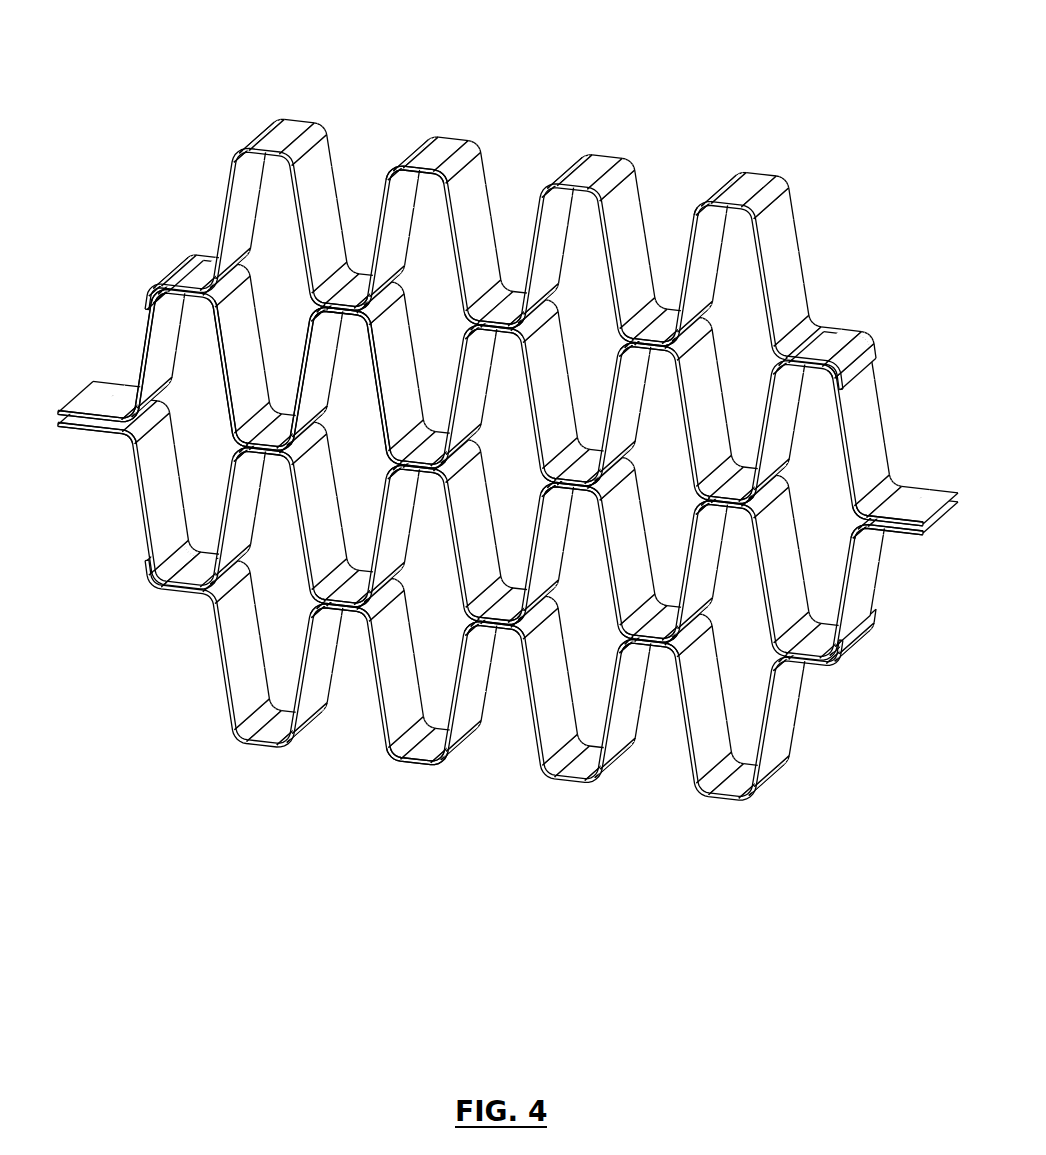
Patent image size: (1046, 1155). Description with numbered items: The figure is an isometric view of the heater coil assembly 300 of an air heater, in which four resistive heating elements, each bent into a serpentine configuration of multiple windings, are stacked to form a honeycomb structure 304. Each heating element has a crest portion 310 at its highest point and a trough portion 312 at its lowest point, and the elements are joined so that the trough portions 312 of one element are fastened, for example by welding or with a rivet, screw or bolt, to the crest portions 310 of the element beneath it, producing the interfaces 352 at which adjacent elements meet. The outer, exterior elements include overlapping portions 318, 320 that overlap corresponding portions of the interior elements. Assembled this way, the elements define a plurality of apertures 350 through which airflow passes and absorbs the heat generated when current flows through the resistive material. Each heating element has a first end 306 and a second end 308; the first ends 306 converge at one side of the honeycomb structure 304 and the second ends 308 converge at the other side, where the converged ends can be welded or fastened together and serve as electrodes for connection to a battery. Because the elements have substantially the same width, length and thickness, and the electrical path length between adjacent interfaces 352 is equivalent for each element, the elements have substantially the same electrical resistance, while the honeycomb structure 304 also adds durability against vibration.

The heater coil assembly 300 is at (322, 63).
The honeycomb structure 304 is at (673, 133).
The first end 306 is at (100, 396).
The second end 308 is at (905, 545).
The crest portion 310 is at (442, 143).
The trough portion 312 is at (410, 762).
The overlapping portion 318 is at (148, 310).
The overlapping portion 320 is at (840, 420).
The aperture 350 is at (221, 446).
The interface 352 is at (625, 340).